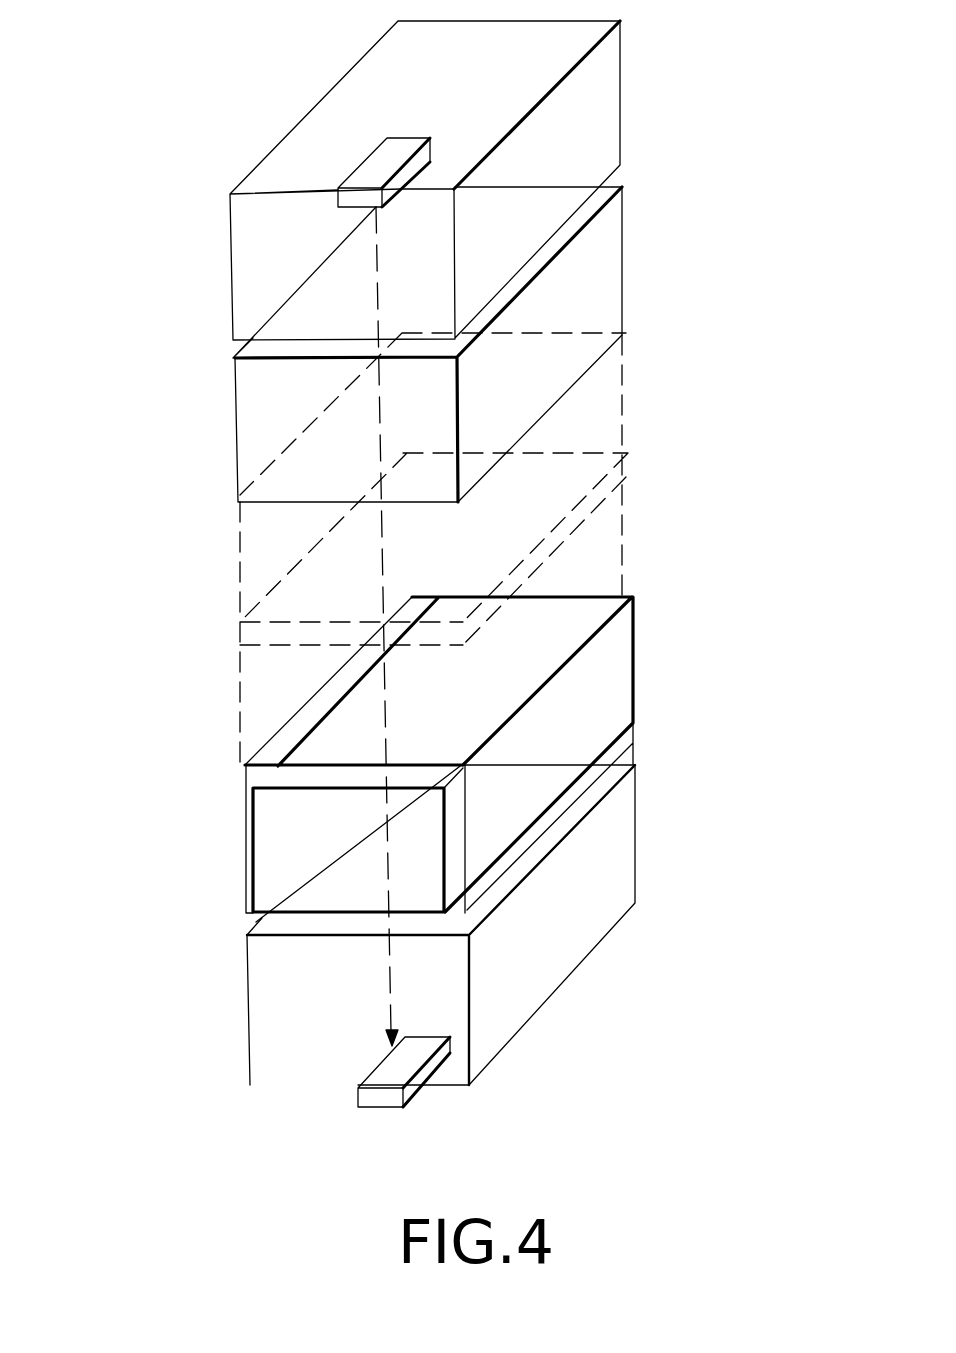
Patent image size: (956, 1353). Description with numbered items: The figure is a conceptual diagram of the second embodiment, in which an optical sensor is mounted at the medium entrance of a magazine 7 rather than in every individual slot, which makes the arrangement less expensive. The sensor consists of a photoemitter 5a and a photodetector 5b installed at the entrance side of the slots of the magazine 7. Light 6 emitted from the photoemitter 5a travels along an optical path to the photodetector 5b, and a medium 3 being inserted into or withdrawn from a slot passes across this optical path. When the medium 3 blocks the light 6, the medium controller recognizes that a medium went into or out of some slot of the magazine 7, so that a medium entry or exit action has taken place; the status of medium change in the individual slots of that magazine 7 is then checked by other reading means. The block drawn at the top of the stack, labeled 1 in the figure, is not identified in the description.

The first optical block 1 is at (247, 227).
The medium 3 is at (245, 803).
The photoemitter 5a is at (368, 157).
The photodetector 5b is at (393, 1072).
The light 6 is at (377, 428).
The magazine 7 is at (668, 175).